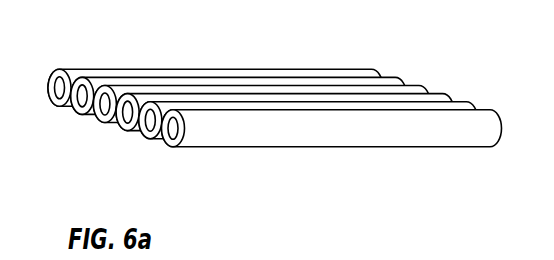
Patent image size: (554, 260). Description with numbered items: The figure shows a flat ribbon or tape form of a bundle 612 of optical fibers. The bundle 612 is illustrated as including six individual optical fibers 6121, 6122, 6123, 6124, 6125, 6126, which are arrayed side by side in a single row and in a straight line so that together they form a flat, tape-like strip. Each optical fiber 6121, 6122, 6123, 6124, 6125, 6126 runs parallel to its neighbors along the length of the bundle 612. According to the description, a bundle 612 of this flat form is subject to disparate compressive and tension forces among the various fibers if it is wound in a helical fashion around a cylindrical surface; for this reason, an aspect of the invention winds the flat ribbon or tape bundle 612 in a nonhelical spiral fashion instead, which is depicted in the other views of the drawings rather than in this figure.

The bundle of optical fibers 612 is at (272, 109).
The optical fiber 6121 is at (122, 71).
The optical fiber 6122 is at (222, 79).
The optical fiber 6123 is at (298, 88).
The optical fiber 6124 is at (127, 131).
The optical fiber 6125 is at (151, 140).
The optical fiber 6126 is at (325, 160).